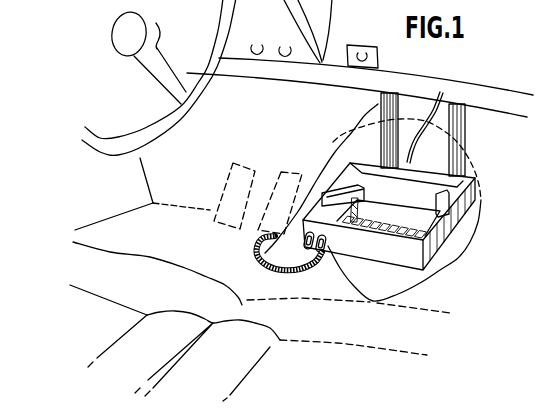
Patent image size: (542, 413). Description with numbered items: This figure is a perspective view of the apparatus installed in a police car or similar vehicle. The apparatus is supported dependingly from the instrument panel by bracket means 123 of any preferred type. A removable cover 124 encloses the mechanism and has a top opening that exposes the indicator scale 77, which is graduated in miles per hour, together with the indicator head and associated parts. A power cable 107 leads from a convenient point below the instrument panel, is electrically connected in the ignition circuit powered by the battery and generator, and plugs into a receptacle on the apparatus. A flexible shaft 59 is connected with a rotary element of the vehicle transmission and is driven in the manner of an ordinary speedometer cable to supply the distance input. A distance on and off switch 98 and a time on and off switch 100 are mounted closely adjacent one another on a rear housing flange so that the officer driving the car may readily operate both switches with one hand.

The bracket means 123 is at (379, 109).
The power cable 107 is at (419, 142).
The removable cover 124 is at (470, 215).
The indicator scale 77 is at (373, 224).
The time on and off switch 100 is at (325, 250).
The flexible shaft 59 is at (305, 242).
The distance on and off switch 98 is at (290, 269).